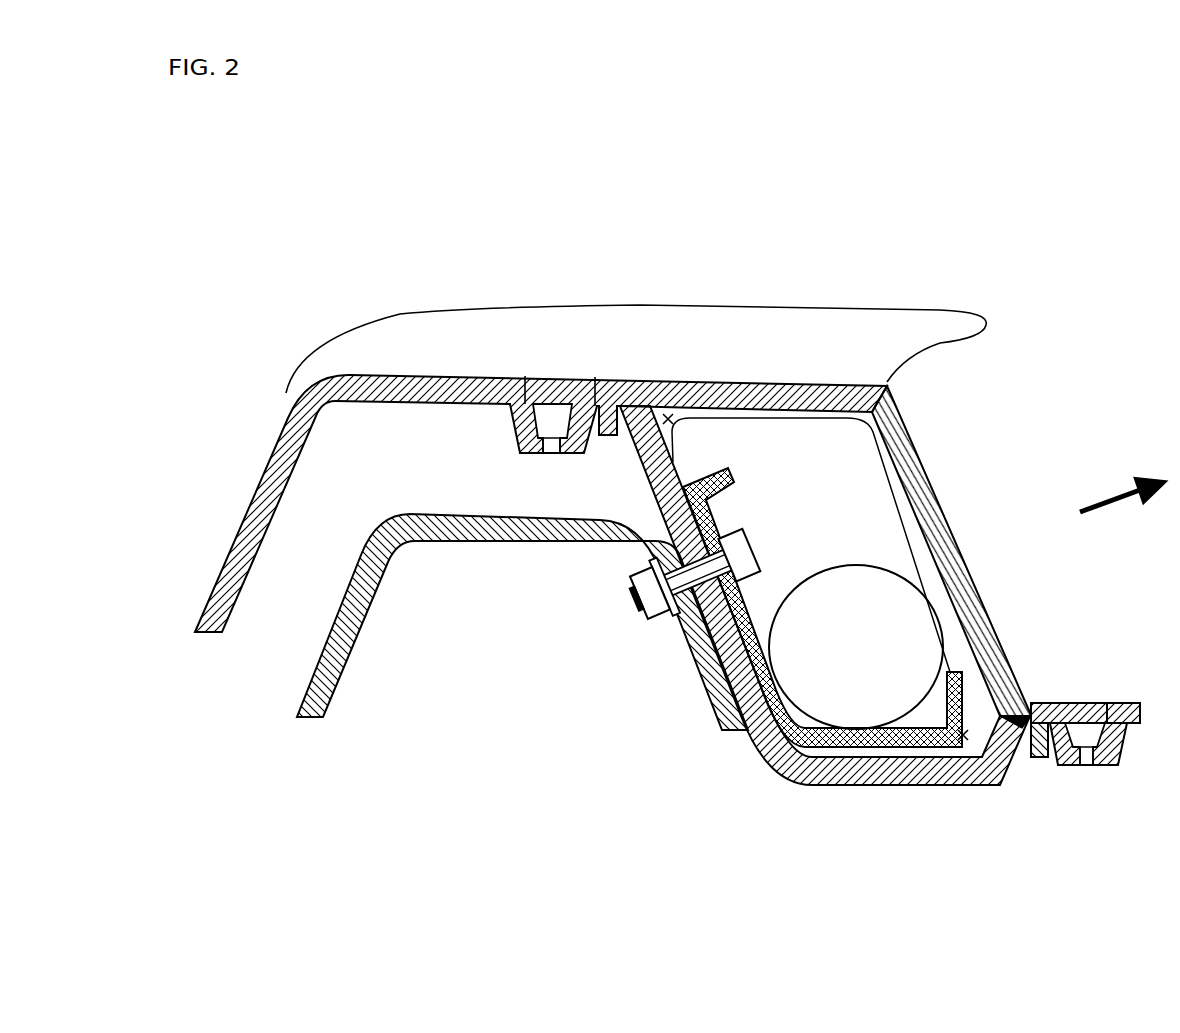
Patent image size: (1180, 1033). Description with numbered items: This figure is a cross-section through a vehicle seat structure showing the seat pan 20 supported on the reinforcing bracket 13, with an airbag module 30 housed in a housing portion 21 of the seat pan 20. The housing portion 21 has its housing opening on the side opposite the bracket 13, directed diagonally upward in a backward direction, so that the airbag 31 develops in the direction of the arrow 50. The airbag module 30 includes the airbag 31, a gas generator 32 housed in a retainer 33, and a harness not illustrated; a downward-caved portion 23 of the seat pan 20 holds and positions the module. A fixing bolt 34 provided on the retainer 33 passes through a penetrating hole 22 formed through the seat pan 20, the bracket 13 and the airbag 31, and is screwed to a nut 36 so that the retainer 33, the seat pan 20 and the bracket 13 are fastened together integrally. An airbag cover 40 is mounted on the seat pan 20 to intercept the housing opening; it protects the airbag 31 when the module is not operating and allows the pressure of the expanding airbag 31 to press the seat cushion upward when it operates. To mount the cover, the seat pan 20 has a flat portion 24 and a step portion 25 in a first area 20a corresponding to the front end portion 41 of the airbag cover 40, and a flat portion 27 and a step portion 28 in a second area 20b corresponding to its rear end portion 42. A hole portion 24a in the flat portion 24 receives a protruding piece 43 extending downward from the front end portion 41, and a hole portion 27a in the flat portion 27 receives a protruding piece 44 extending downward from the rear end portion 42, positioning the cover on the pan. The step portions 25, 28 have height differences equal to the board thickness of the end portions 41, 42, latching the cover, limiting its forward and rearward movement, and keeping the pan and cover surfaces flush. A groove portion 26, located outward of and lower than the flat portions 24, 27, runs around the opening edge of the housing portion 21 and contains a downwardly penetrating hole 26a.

The bracket 13 is at (352, 639).
The seat pan 20 is at (263, 453).
The first area 20a is at (572, 467).
The second area 20b is at (1066, 782).
The housing portion 21 is at (669, 416).
The penetrating hole 22 is at (678, 604).
The caved portion 23 is at (961, 745).
The flat portion 24 is at (634, 398).
The hole portion 24a is at (601, 402).
The step portion 25 is at (520, 377).
The groove portion 26 is at (528, 459).
The penetrating hole 26a is at (552, 455).
The flat portion 27 is at (1032, 703).
The hole portion 27a is at (1050, 703).
The step portion 28 is at (1111, 705).
The airbag module 30 is at (926, 428).
The airbag 31 is at (890, 547).
The gas generator 32 is at (875, 643).
The retainer 33 is at (902, 748).
The fixing bolt 34 is at (739, 546).
The nut 36 is at (650, 614).
The airbag cover 40 is at (922, 497).
The front end portion 41 is at (544, 377).
The rear end portion 42 is at (1075, 703).
The protruding piece 43 is at (612, 437).
The protruding piece 44 is at (1037, 758).
The arrow 50 is at (1123, 480).